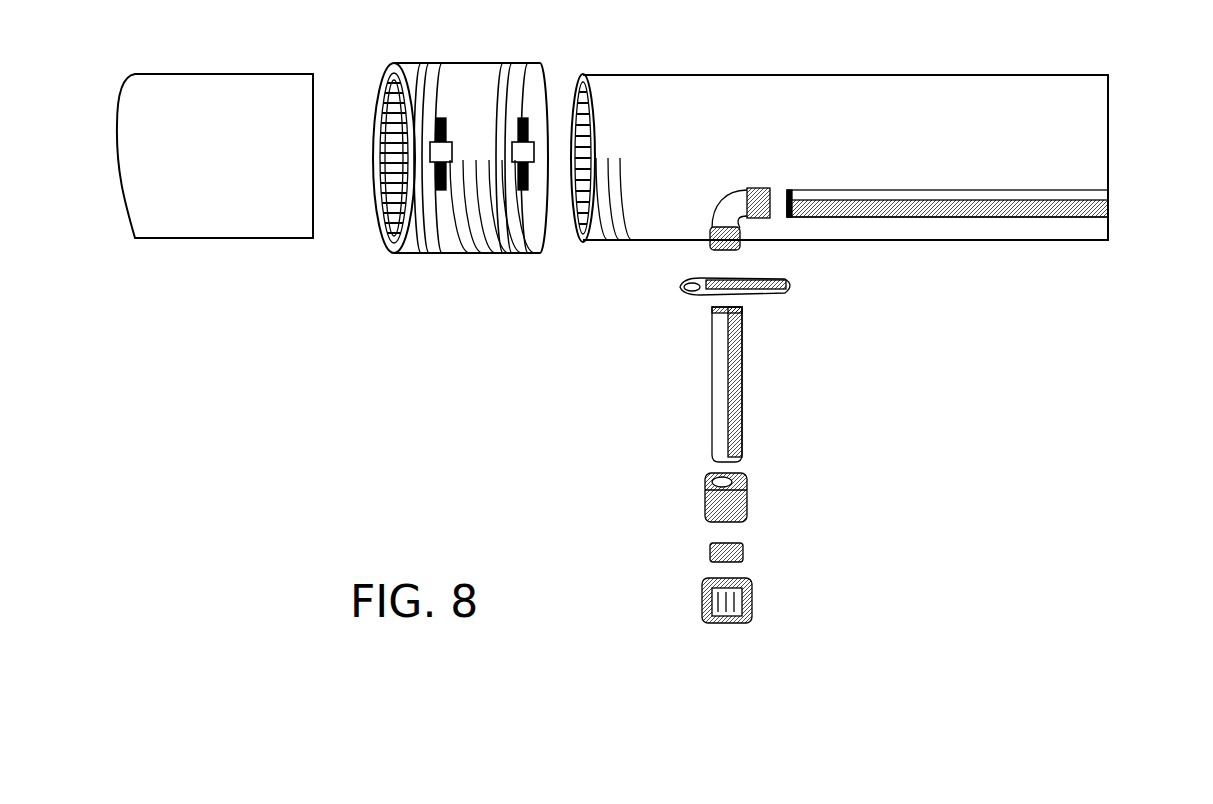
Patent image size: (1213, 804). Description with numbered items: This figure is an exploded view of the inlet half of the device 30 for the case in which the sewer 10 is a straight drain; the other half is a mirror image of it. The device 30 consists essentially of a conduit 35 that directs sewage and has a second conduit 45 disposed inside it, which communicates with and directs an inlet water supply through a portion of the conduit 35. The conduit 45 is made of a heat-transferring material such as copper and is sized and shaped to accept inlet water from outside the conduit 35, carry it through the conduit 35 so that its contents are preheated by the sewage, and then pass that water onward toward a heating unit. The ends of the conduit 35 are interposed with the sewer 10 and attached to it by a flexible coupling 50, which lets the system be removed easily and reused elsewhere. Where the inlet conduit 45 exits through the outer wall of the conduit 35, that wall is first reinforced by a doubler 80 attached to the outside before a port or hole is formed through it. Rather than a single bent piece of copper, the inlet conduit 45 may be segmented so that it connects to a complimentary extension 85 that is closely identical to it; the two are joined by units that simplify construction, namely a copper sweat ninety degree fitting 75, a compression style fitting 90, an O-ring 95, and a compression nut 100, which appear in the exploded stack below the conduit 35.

The sewer 10 is at (230, 240).
The device 30 is at (408, 394).
The conduit 35 is at (1104, 77).
The conduit 45 is at (1108, 205).
The flexible coupling 50 is at (458, 253).
The copper sweat 90 degree fitting 75 is at (730, 196).
The doubler 80 is at (795, 287).
The complimentary extension 85 is at (742, 381).
The compression style fitting 90 is at (705, 491).
The O-ring 95 is at (712, 550).
The compression nut 100 is at (710, 620).